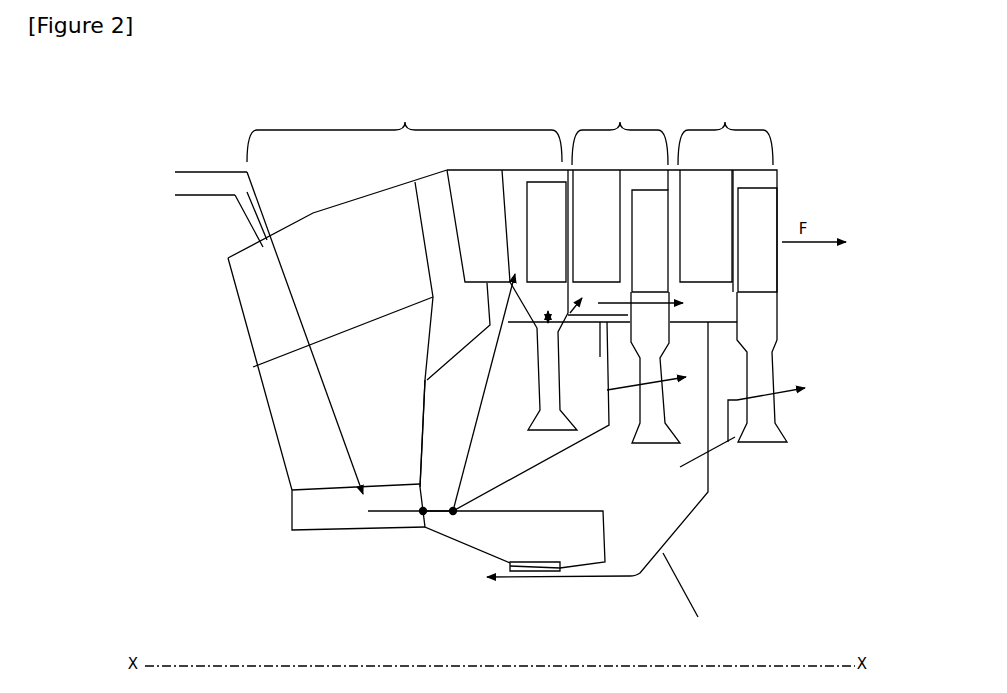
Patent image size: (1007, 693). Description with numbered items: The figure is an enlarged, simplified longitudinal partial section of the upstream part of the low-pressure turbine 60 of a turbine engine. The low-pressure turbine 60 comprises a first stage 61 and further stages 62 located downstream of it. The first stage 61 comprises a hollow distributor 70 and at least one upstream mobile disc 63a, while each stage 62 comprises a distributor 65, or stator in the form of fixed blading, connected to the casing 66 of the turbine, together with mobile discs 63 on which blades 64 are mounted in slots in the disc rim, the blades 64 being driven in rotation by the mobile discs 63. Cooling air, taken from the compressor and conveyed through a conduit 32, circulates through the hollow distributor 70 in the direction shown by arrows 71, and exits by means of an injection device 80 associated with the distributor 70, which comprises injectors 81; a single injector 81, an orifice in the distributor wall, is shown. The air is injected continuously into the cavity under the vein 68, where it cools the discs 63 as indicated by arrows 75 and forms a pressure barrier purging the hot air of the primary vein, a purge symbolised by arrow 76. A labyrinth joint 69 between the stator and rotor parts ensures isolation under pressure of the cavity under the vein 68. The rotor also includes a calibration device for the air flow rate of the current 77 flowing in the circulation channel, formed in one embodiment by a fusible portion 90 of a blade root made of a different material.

The conduit 32 is at (215, 171).
The low-pressure turbine 60 is at (787, 112).
The first stage 61 is at (404, 134).
The turbine stages 62 is at (672, 135).
The mobile disc 63 is at (657, 445).
The upstream mobile disc 63a is at (552, 424).
The blade 64 is at (652, 237).
The distributor 65 is at (650, 241).
The casing 66 is at (755, 170).
The cavity under the vein 68 is at (594, 469).
The labyrinth joint 69 is at (540, 561).
The hollow distributor 70 is at (392, 192).
The arrows 71 is at (292, 300).
The arrows 75 is at (612, 378).
The arrow 76 is at (502, 364).
The current 77 is at (590, 304).
The injection device 80 is at (437, 489).
The injector 81 is at (420, 508).
The fusible portion 90 is at (556, 324).